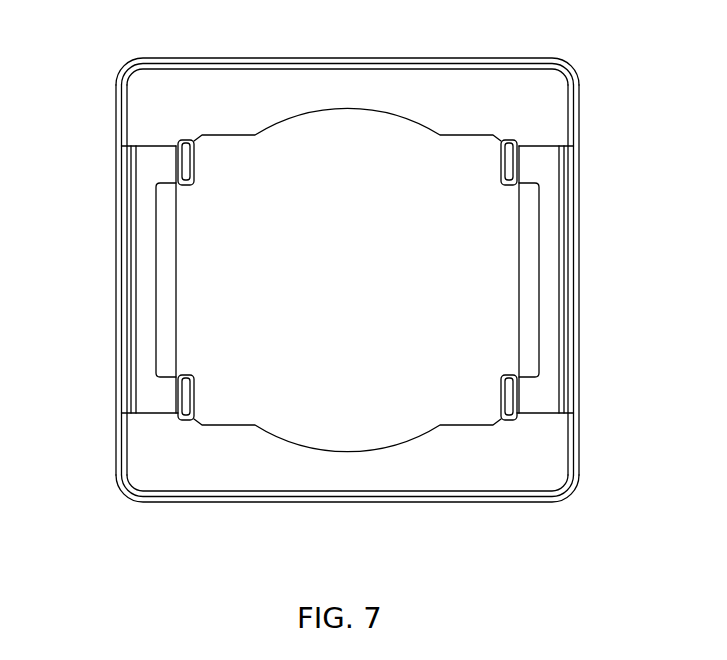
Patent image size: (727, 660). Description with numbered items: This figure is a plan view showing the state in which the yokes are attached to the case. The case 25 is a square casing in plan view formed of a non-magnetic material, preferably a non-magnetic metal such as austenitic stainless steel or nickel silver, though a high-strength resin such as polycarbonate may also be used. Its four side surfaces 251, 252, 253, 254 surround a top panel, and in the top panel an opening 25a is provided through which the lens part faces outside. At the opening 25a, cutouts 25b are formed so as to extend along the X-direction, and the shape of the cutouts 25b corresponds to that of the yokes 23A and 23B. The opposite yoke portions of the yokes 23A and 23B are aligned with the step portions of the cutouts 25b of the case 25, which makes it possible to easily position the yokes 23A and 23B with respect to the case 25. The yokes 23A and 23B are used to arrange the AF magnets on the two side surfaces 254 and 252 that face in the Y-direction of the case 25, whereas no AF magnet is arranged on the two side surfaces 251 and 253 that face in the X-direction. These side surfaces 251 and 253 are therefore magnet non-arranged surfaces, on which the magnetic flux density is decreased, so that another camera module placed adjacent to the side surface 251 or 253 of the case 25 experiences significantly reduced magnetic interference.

The case 25 is at (347, 280).
The side surface 251 is at (323, 58).
The side surface 252 is at (579, 113).
The side surface 253 is at (321, 502).
The side surface 254 is at (116, 117).
The opening 25a is at (355, 108).
The cutouts 25b is at (177, 270).
The yoke 23A is at (148, 390).
The yoke 23B is at (548, 388).